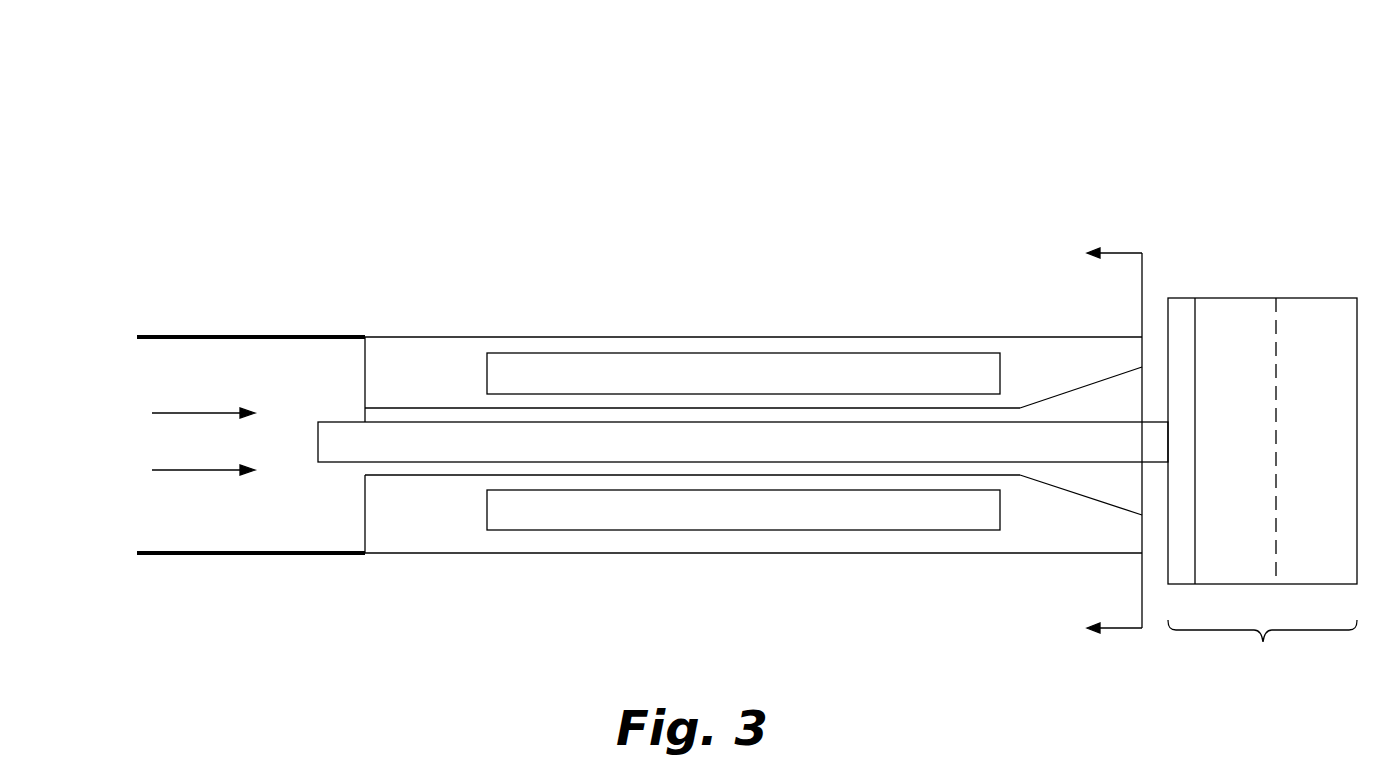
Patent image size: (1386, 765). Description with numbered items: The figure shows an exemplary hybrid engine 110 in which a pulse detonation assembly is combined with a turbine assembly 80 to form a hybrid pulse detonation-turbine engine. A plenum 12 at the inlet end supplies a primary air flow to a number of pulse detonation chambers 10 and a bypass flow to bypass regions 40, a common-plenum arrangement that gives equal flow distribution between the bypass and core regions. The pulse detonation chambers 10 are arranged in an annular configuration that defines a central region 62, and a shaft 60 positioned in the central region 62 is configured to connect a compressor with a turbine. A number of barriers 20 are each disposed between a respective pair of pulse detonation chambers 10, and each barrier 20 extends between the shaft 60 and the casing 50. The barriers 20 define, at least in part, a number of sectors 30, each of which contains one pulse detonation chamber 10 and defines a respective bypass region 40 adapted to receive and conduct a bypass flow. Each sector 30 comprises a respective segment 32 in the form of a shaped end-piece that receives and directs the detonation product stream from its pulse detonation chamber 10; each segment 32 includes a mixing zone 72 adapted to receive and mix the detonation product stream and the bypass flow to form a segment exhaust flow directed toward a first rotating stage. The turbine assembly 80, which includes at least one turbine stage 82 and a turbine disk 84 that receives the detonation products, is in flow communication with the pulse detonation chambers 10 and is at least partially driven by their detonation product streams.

The hybrid engine 110 is at (1113, 89).
The shaft 60 is at (316, 420).
The central region 62 is at (363, 465).
The plenum 12 is at (253, 525).
The barrier 20 is at (408, 475).
The sector 30 is at (412, 352).
The mixing zone 72 is at (1018, 375).
The segment 32 is at (1062, 492).
The pulse detonation chamber 10 is at (515, 355).
The casing 50 is at (642, 335).
The bypass region 40 is at (743, 343).
The turbine assembly 80 is at (1262, 489).
The turbine disk 84 is at (1183, 297).
The turbine stage 82 is at (1237, 323).